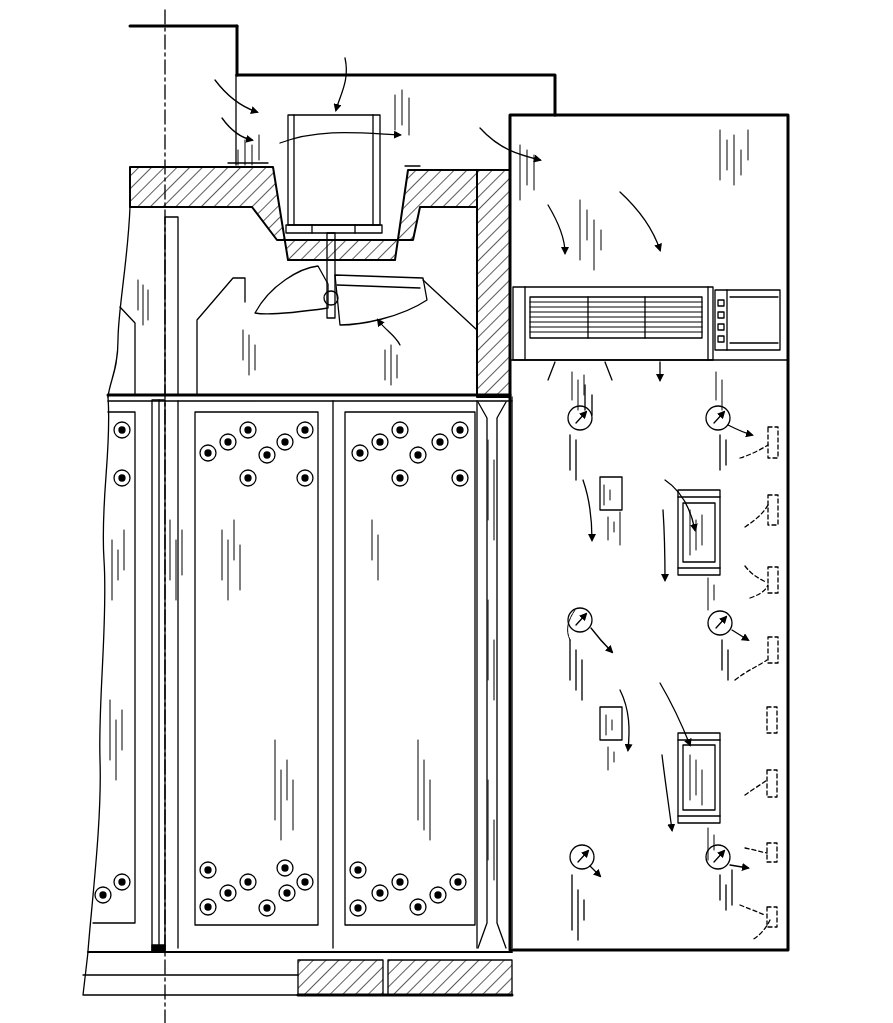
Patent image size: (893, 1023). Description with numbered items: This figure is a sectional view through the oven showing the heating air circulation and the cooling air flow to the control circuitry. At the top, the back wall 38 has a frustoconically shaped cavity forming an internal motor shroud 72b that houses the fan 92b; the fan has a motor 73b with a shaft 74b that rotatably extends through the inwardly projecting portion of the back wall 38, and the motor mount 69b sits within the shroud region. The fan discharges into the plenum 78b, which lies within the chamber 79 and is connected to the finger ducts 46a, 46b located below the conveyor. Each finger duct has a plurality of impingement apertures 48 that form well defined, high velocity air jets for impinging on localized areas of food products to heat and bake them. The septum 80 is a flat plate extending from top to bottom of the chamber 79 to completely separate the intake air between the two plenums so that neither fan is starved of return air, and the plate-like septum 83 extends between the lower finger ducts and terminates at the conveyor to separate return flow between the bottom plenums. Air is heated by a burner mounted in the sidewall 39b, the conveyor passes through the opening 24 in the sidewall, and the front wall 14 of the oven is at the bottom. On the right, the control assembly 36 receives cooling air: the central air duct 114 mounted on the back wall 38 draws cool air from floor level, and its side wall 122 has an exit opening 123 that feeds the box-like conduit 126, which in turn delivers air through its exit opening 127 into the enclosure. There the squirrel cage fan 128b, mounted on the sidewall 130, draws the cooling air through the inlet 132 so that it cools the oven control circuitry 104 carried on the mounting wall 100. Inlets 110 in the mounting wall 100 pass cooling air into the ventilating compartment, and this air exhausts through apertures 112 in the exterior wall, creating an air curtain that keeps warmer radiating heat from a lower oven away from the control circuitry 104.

The central air duct 114 is at (225, 26).
The side wall 122 is at (240, 40).
The exit opening 123 is at (248, 75).
The box-like conduit 126 is at (468, 95).
The motor mount 69b is at (354, 72).
The motor 73b is at (355, 117).
The back wall 38 is at (460, 170).
The control assembly 36 is at (752, 108).
The exit opening 127 is at (520, 128).
The sidewall 39b is at (505, 195).
The squirrel cage fan 128b is at (688, 290).
The sidewall 130 is at (758, 360).
The inlet 132 is at (650, 362).
The chamber 79 is at (212, 239).
The internal motor shroud 72b is at (266, 238).
The septum 80 is at (166, 275).
The shaft 74b is at (385, 276).
The fan 92b is at (407, 338).
The plenum 78b is at (352, 368).
The plate-like septum 83 is at (155, 622).
The opening 24 is at (505, 525).
The finger duct 46a is at (280, 671).
The finger duct 46b is at (428, 671).
The impingement apertures 48 is at (252, 485).
The front wall 14 is at (228, 975).
The mounting wall 100 is at (568, 576).
The inlets 110 is at (570, 422).
The oven control circuitry 104 is at (610, 477).
The apertures 112 is at (742, 458).